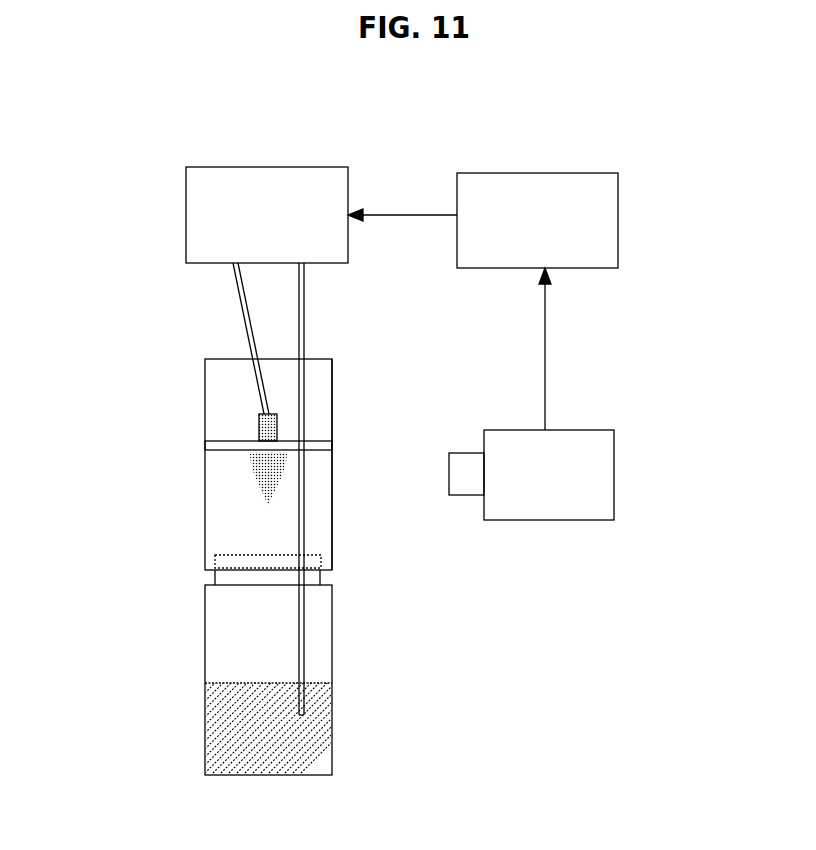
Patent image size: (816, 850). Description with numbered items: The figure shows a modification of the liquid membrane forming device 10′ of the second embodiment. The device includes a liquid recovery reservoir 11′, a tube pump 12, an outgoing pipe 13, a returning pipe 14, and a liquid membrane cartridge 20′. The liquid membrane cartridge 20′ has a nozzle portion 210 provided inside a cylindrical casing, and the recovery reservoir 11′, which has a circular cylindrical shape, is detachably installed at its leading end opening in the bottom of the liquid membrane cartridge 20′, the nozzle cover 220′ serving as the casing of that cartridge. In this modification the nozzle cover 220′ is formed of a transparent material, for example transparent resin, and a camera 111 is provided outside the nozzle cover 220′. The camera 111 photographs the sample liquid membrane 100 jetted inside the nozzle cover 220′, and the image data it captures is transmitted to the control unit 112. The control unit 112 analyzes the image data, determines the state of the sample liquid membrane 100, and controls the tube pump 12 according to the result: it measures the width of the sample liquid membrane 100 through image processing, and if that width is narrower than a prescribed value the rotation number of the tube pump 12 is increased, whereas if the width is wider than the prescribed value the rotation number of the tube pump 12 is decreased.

The liquid membrane forming device 10′ is at (297, 127).
The tube pump 12 is at (330, 167).
The outgoing pipe 13 is at (246, 322).
The returning pipe 14 is at (301, 322).
The liquid membrane cartridge 20′ is at (358, 413).
The nozzle cover 220′ is at (333, 512).
The nozzle portion 210 is at (258, 424).
The sample liquid membrane 100 is at (270, 477).
The liquid recovery reservoir 11′ is at (333, 655).
The control unit 112 is at (620, 228).
The camera 111 is at (578, 430).